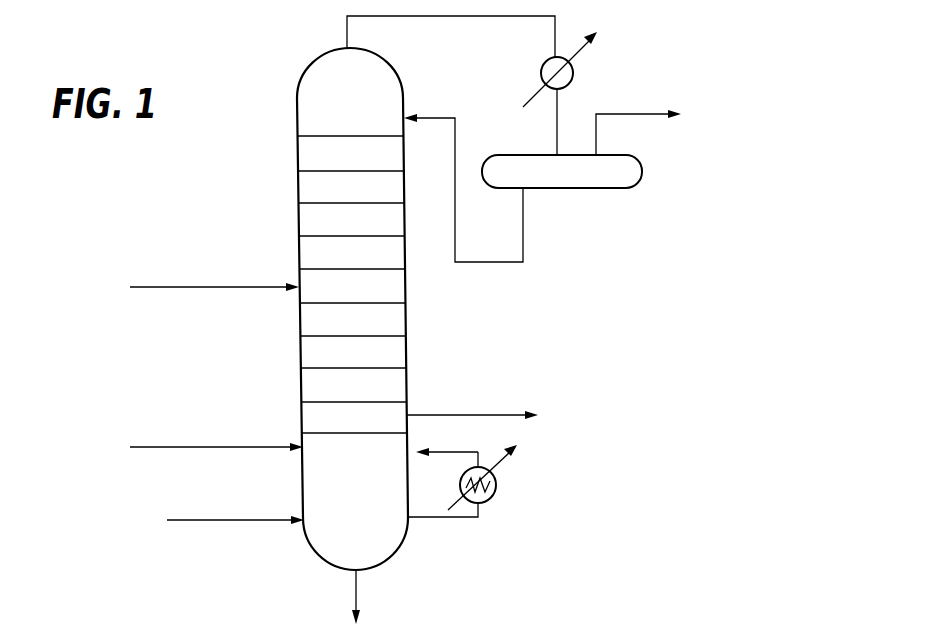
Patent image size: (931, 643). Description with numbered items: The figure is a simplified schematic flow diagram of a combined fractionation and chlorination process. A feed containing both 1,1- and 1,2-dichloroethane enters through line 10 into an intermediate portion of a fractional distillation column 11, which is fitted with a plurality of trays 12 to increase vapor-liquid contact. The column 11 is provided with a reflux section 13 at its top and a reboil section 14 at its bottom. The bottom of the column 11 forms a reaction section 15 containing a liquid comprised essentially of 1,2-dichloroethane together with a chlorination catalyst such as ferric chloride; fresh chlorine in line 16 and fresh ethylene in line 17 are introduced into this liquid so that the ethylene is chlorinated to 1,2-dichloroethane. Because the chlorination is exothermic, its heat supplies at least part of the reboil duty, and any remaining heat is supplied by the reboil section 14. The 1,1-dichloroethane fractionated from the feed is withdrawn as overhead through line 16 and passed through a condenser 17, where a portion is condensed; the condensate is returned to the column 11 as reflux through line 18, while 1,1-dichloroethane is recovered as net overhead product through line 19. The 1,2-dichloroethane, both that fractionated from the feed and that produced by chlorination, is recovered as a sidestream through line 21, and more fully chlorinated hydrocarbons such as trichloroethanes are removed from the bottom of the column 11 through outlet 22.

The feed line 10 is at (226, 288).
The fractional distillation column 11 is at (418, 354).
The trays 12 is at (398, 300).
The reflux section 13 is at (606, 200).
The reboil section 14 is at (509, 510).
The reaction section 15 is at (423, 521).
The chlorine feed line / overhead line 16 is at (458, 22).
The ethylene feed line / condenser 17 is at (547, 58).
The reflux line 18 is at (457, 155).
The net overhead product line 19 is at (633, 115).
The sidestream line 21 is at (505, 418).
The outlet 22 is at (360, 588).